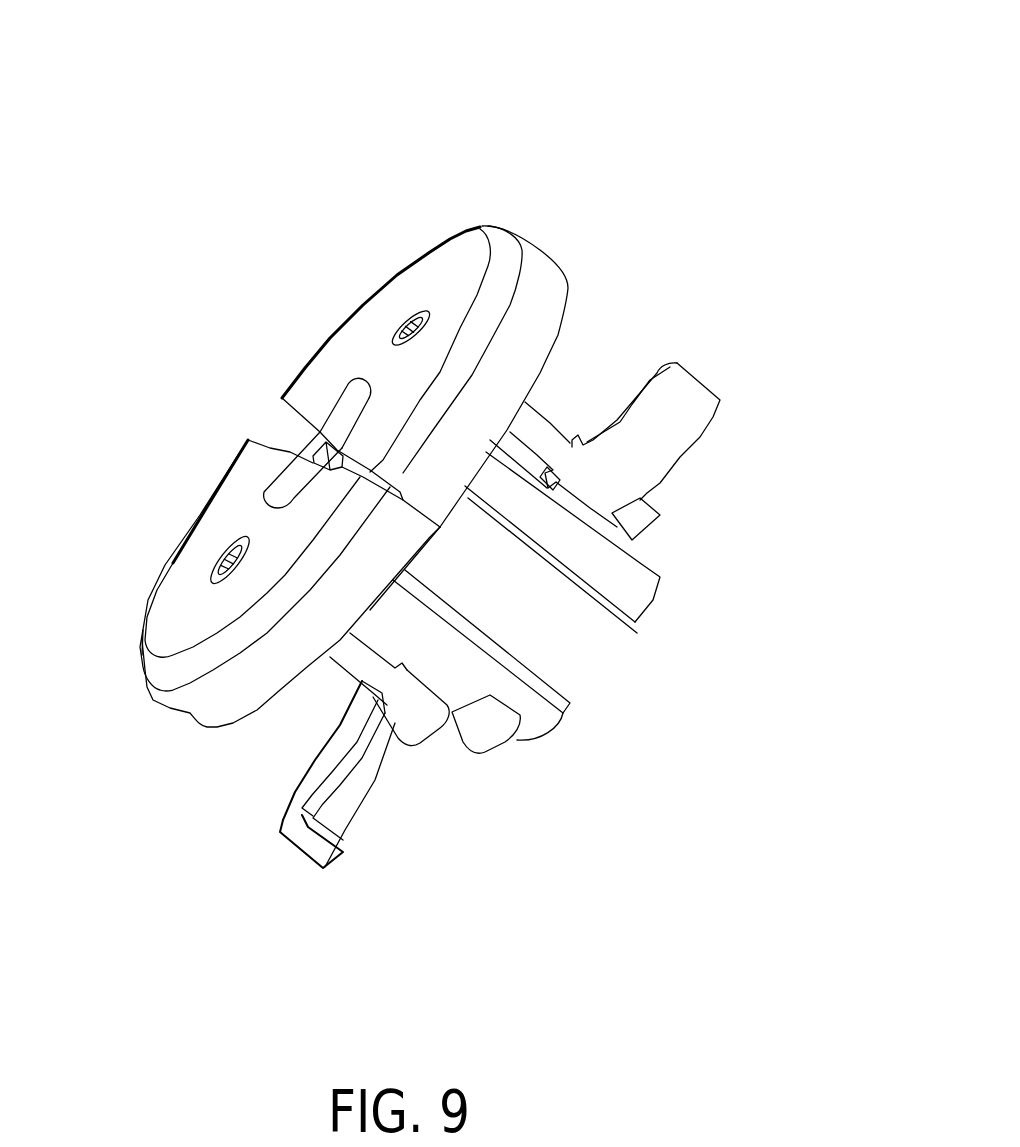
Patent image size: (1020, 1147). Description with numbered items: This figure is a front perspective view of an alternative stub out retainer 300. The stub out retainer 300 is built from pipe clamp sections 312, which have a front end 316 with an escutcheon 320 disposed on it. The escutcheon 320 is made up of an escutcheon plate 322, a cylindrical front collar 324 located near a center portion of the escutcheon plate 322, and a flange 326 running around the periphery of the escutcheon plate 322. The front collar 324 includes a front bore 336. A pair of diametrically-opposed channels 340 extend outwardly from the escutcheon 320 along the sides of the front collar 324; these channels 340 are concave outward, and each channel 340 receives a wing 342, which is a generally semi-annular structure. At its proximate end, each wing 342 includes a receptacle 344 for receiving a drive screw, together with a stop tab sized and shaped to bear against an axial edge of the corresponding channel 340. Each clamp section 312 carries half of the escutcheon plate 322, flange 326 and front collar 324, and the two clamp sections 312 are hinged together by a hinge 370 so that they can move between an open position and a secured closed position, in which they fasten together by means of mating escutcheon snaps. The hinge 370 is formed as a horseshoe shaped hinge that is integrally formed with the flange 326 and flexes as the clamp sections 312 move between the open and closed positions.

The stub out retainer 300 is at (570, 98).
The pipe clamp sections 312 is at (667, 210).
The front end 316 is at (240, 343).
The escutcheon 320 is at (440, 215).
The escutcheon plate 322 is at (226, 520).
The front collar 324 is at (647, 597).
The flange 326 is at (193, 700).
The front bore 336 is at (352, 398).
The channels 340 is at (637, 537).
The wing 342 is at (692, 392).
The receptacle 344 is at (573, 447).
The hinge 370 is at (432, 490).